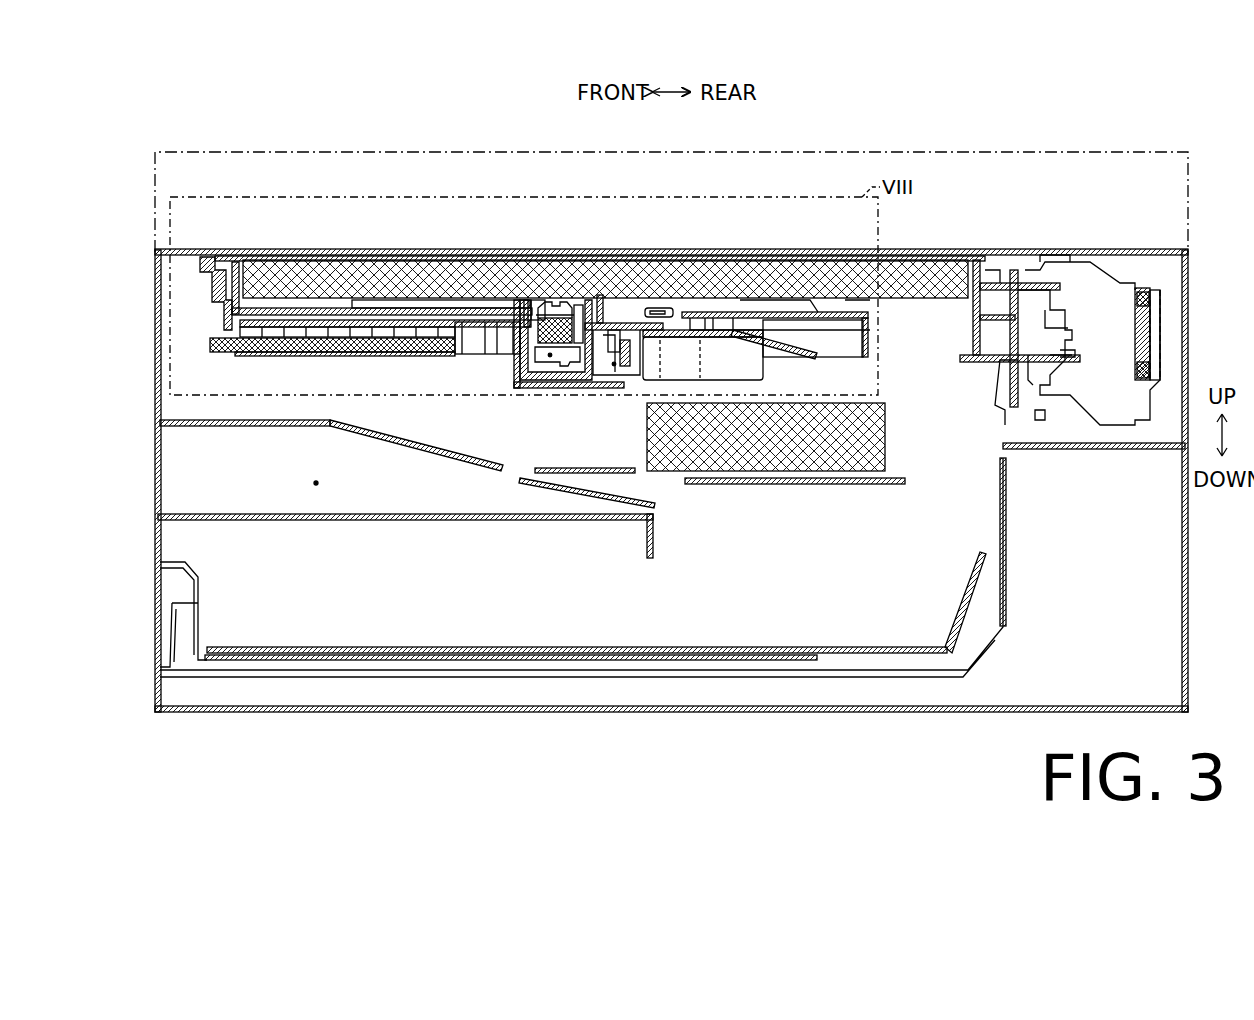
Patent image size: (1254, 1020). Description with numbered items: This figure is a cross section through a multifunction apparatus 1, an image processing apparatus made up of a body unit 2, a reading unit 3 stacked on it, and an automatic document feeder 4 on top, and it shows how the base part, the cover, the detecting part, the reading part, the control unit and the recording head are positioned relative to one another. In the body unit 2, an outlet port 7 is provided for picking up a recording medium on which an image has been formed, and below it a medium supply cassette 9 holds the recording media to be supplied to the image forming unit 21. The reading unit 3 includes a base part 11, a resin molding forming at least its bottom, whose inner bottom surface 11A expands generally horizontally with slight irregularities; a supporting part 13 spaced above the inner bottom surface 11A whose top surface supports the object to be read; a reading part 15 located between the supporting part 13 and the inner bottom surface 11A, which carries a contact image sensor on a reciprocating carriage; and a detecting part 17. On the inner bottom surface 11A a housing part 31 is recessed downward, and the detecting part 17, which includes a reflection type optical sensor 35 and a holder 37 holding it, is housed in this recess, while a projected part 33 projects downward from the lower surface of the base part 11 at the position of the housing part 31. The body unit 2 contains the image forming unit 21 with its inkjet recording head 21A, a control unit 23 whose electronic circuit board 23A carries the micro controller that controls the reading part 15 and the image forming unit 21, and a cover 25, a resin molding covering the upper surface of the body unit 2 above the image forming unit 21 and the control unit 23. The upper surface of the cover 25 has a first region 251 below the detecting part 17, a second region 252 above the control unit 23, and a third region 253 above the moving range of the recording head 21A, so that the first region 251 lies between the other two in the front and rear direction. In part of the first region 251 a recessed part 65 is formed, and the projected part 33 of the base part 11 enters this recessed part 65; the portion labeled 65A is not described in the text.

The multifunction apparatus 1 is at (275, 110).
The body unit 2 is at (1186, 530).
The reading unit 3 is at (1190, 273).
The automatic document feeder 4 is at (1190, 183).
The outlet port 7 is at (312, 482).
The medium supply cassette 9 is at (152, 590).
The base part 11 is at (835, 322).
The inner bottom surface 11A is at (379, 300).
The supporting part 13 is at (283, 256).
The reading part 15 is at (336, 262).
The detecting part 17 is at (558, 318).
The image forming unit 21 is at (893, 470).
The recording head 21A is at (886, 418).
The control unit 23 is at (232, 354).
The electronic circuit board 23A is at (322, 356).
The cover 25 is at (483, 340).
The housing part 31 is at (547, 358).
The projected part 33 is at (567, 364).
The optical sensor 35 is at (538, 302).
The holder 37 is at (578, 305).
The recessed part 65 is at (614, 366).
The mount 65A is at (600, 386).
The first region 251 is at (632, 340).
The second region 252 is at (424, 320).
The third region 253 is at (700, 312).